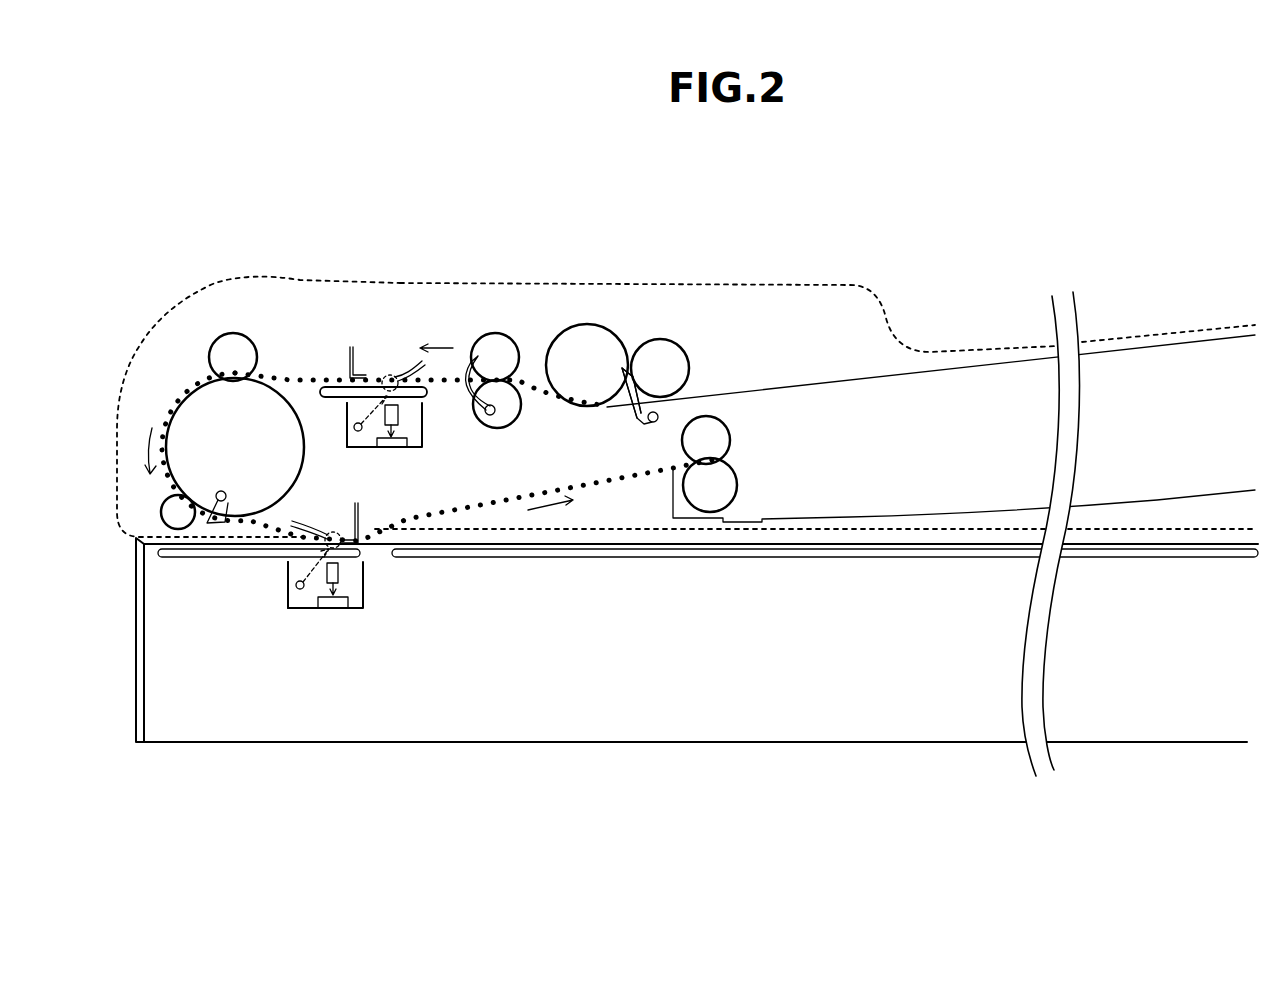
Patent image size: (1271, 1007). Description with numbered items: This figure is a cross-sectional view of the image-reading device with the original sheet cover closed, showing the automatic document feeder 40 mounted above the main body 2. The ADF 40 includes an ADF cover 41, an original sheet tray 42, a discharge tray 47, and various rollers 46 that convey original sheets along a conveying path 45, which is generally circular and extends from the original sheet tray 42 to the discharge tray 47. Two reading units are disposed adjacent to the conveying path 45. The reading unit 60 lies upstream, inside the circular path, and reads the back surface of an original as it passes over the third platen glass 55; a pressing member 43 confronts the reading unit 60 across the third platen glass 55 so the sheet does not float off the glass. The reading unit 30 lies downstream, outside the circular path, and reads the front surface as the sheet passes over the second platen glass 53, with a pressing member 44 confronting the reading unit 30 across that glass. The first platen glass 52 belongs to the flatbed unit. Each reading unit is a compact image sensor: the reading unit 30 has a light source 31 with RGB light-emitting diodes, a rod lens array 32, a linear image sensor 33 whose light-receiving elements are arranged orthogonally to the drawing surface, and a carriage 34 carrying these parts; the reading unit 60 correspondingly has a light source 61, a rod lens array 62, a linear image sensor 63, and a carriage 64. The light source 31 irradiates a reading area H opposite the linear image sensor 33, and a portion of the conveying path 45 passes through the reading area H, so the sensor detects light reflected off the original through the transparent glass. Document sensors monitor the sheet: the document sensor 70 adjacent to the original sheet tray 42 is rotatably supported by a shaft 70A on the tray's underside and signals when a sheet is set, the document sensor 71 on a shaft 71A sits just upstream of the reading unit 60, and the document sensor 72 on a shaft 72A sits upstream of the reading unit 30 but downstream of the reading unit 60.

The main body 2 is at (134, 622).
The reading unit 30 is at (330, 617).
The light source 31 is at (293, 585).
The rod lens array 32 is at (343, 572).
The linear image sensor 33 is at (342, 608).
The carriage 34 is at (287, 602).
The automatic document feeder 40 is at (916, 192).
The ADF cover 41 is at (820, 283).
The original sheet tray 42 is at (1168, 343).
The pressing member 43 is at (355, 347).
The pressing member 44 is at (354, 503).
The conveying path 45 is at (273, 378).
The rollers 46 is at (228, 350).
The discharge tray 47 is at (1157, 500).
The first platen glass 52 is at (565, 558).
The second platen glass 53 is at (202, 552).
The third platen glass 55 is at (337, 387).
The reading unit 60 is at (389, 446).
The light source 61 is at (355, 423).
The rod lens array 62 is at (400, 415).
The linear image sensor 63 is at (402, 448).
The carriage 64 is at (346, 427).
The document sensor 70 is at (645, 424).
The shaft 70A is at (663, 404).
The document sensor 71 is at (477, 417).
The shaft 71A is at (500, 417).
The document sensor 72 is at (227, 495).
The shaft 72A is at (223, 492).
The reading area H is at (395, 372).